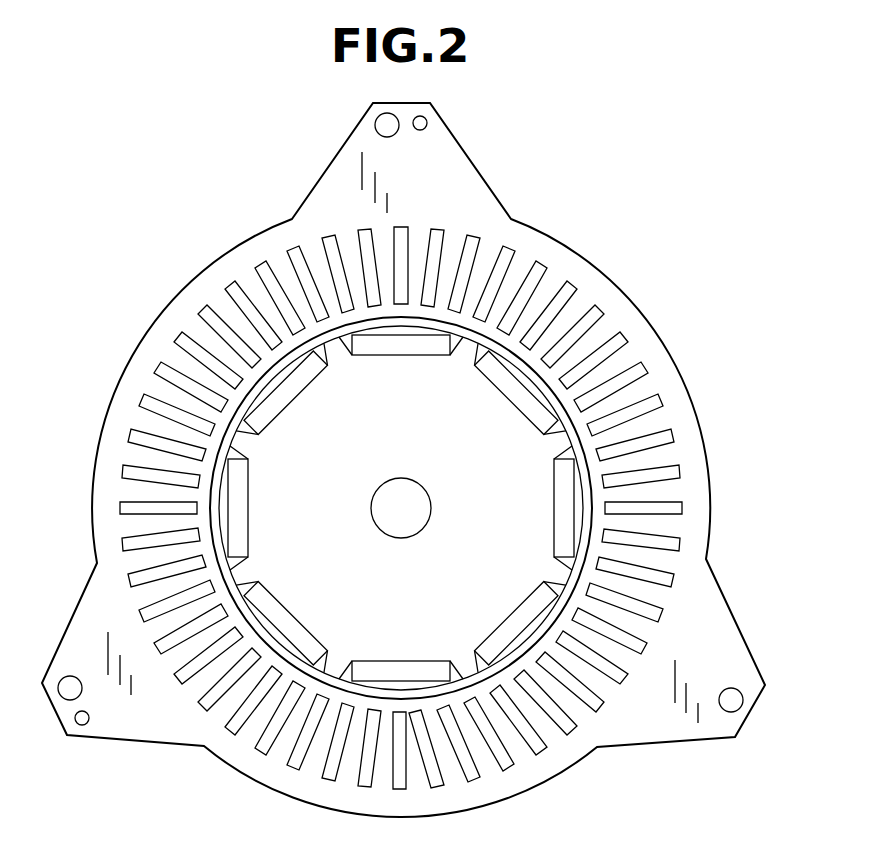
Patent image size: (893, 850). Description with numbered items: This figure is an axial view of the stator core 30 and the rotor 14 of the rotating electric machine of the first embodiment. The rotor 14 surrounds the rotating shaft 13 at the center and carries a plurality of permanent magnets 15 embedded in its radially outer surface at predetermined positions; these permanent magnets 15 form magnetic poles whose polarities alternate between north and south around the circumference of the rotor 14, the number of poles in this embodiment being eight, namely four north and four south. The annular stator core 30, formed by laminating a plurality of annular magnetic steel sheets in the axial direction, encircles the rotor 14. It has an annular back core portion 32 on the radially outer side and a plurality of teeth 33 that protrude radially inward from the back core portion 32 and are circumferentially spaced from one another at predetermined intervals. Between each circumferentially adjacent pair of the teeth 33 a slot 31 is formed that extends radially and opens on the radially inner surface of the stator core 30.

The rotating shaft 13 is at (400, 510).
The rotor 14 is at (490, 453).
The permanent magnets 15 is at (408, 340).
The stator core 30 is at (128, 298).
The slot 31 is at (560, 308).
The back core portion 32 is at (401, 460).
The teeth 33 is at (495, 320).